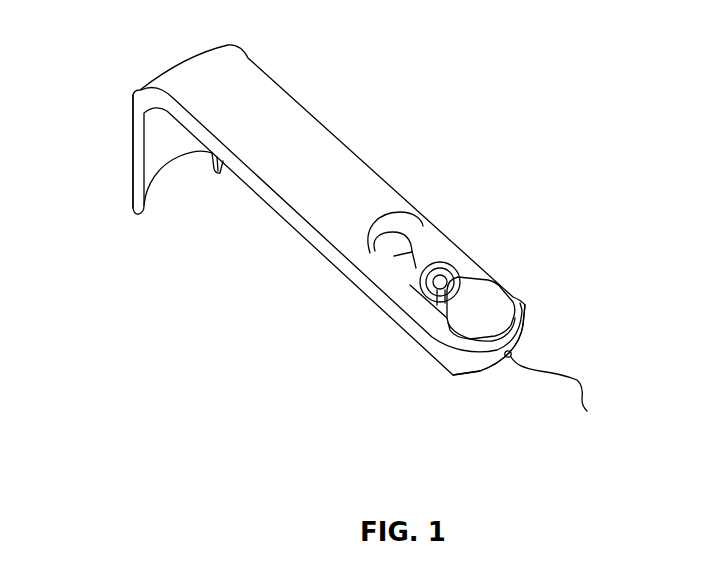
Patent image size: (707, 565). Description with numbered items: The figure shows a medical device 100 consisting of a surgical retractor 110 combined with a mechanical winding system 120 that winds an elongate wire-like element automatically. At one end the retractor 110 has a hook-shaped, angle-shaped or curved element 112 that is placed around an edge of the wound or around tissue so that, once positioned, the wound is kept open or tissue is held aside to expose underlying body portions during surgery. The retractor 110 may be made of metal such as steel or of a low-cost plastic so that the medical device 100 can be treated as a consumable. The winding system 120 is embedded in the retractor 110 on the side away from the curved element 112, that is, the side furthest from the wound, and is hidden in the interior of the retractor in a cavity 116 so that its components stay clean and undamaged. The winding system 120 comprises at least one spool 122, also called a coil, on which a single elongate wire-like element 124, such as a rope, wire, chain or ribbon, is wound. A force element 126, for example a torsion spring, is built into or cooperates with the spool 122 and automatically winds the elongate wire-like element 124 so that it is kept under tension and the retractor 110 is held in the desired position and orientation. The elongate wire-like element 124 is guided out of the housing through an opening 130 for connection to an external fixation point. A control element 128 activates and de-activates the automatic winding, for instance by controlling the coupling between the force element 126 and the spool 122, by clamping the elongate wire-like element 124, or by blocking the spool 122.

The medical device 100 is at (95, 62).
The retractor 110 is at (322, 126).
The hook-shaped, angle-shaped or curved element 112 is at (135, 152).
The cavity 116 is at (393, 257).
The mechanical winding system 120 is at (528, 325).
The spool 122 is at (457, 262).
The elongate wire-like element 124 is at (583, 388).
The force element 126 is at (437, 284).
The control element 128 is at (475, 312).
The opening 130 is at (512, 353).